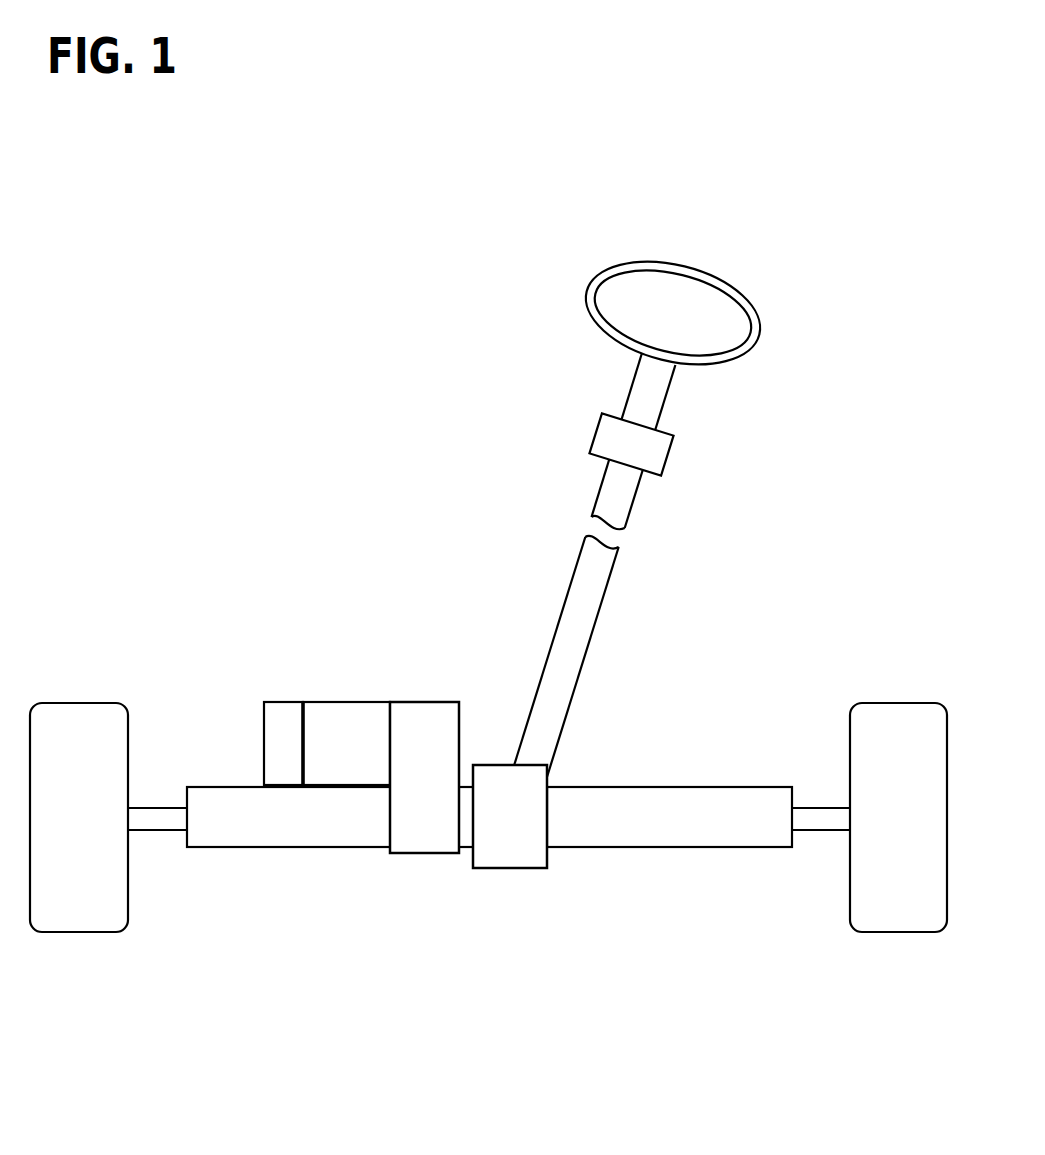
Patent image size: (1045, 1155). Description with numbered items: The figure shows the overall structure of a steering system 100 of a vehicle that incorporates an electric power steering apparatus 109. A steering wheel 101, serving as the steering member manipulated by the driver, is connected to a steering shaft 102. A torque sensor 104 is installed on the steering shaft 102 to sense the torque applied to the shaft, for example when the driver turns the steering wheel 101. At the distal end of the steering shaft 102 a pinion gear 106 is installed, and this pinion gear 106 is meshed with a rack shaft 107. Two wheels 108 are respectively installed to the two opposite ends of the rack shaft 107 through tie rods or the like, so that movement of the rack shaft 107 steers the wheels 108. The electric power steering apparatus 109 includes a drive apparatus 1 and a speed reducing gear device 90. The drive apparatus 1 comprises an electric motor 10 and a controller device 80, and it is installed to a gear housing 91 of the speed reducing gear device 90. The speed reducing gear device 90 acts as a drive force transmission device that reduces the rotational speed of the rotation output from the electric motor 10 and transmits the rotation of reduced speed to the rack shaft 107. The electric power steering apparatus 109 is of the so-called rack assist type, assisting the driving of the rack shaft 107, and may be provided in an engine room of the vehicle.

The steering system 100 is at (265, 977).
The steering wheel 101 is at (682, 270).
The steering shaft 102 is at (562, 698).
The torque sensor 104 is at (665, 450).
The pinion gear 106 is at (510, 862).
The rack shaft 107 is at (597, 838).
The wheels 108 is at (73, 717).
The electric power steering apparatus 109 is at (325, 575).
The drive apparatus 1 is at (333, 693).
The electric motor 10 is at (352, 710).
The controller device 80 is at (282, 710).
The speed reducing gear device 90 is at (436, 695).
The gear housing 91 is at (423, 843).